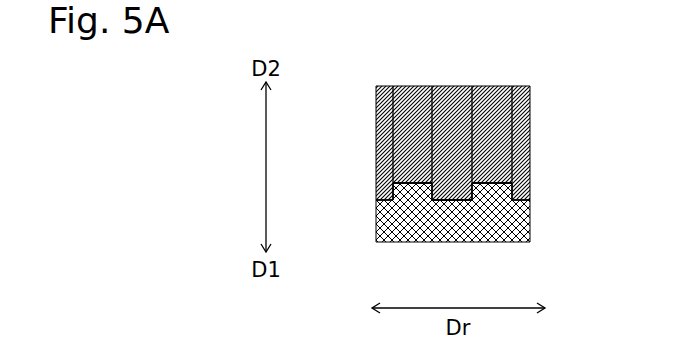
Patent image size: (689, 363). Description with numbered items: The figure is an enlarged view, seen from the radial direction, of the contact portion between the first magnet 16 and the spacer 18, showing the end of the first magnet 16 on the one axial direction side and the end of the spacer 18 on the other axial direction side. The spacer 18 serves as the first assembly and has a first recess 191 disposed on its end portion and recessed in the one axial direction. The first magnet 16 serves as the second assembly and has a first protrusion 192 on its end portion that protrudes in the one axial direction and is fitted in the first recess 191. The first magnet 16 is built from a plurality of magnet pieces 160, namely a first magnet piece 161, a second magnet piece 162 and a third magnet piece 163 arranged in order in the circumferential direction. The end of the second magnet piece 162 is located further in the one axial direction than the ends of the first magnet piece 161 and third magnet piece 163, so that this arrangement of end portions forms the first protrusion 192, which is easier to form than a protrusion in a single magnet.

The magnet pieces 160 is at (406, 112).
The first magnet piece 161 is at (413, 88).
The second magnet piece 162 is at (453, 88).
The third magnet piece 163 is at (497, 88).
The first magnet 16 is at (377, 127).
The spacer 18 is at (452, 236).
The first recess 191 is at (442, 203).
The first protrusion 192 is at (430, 198).